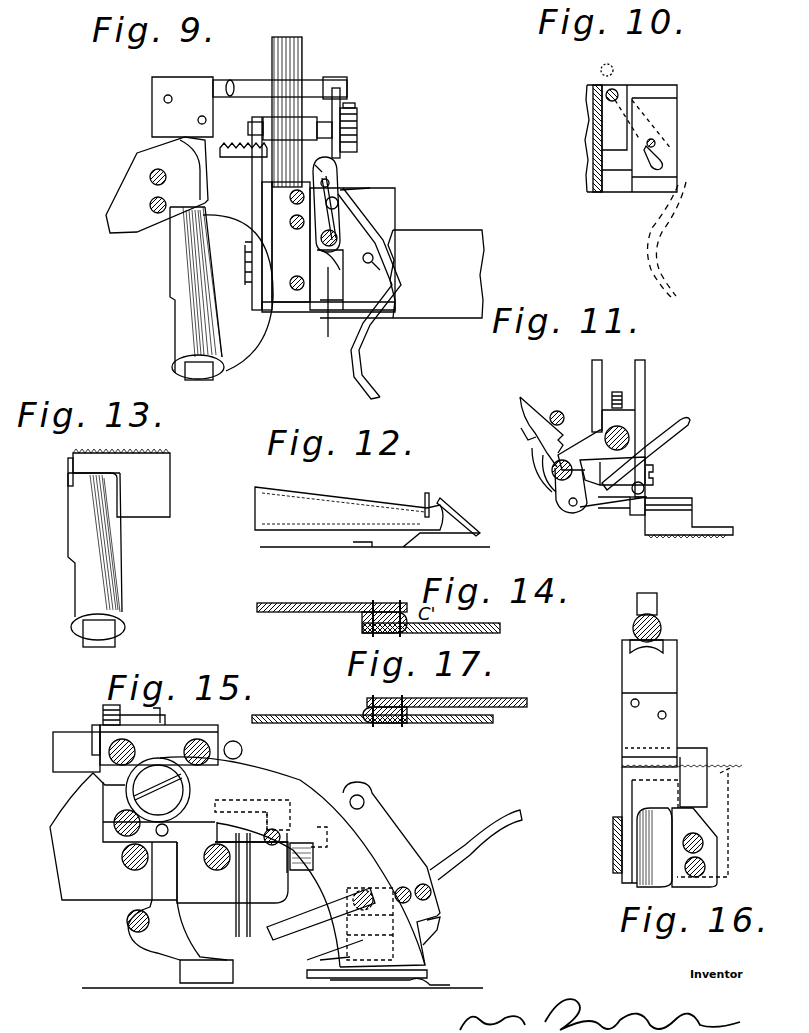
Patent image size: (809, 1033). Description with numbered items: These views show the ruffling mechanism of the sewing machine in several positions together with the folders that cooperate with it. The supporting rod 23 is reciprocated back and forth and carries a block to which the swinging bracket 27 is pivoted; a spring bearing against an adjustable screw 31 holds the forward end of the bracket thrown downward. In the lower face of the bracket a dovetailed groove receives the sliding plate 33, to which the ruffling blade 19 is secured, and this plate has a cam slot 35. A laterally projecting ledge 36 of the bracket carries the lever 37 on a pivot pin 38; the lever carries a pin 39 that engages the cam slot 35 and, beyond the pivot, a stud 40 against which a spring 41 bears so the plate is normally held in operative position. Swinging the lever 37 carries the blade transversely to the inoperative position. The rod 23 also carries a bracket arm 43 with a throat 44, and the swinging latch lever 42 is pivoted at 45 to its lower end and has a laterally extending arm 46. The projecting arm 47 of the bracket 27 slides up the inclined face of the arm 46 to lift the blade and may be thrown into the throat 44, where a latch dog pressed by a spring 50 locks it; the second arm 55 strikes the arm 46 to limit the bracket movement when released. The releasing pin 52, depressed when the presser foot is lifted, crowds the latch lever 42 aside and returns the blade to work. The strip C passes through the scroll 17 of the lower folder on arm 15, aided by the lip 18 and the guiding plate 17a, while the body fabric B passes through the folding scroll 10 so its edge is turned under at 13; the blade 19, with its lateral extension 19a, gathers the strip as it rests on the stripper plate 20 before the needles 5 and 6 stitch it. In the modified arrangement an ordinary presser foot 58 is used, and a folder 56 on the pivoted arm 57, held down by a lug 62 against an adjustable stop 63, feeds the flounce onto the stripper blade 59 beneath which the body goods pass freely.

In FIG. 15, the needle 5 is at (233, 910).
In FIG. 15, the needle 6 is at (257, 927).
In FIG. 9, the folding scroll 10 is at (160, 160).
In FIG. 14, the turned edge of body fabric 13 is at (362, 620).
In FIG. 9, the arm 15 is at (470, 290).
In FIG. 9, the scroll of folder 17 is at (180, 328).
In FIG. 13, the scroll of folder 17 is at (105, 593).
In FIG. 12, the scroll of folder 17 is at (320, 492).
In FIG. 13, the guiding plate 17a is at (68, 477).
In FIG. 12, the guiding plate 17a is at (428, 490).
In FIG. 13, the downwardly projecting lip 18 is at (83, 650).
In FIG. 11, the ruffling blade 19 is at (690, 530).
In FIG. 13, the ruffling blade 19 is at (178, 490).
In FIG. 12, the ruffling blade 19 is at (460, 515).
In FIG. 15, the ruffling blade 19 is at (320, 978).
In FIG. 16, the ruffling blade 19 is at (740, 762).
In FIG. 13, the lateral extension of ruffler blade 19a is at (93, 460).
In FIG. 12, the spring-supporting plate or stripper 20 is at (460, 535).
In FIG. 9, the supporting rod 23 is at (302, 62).
In FIG. 11, the supporting rod 23 is at (628, 435).
In FIG. 15, the supporting rod 23 is at (302, 873).
In FIG. 10, the swinging bracket 27 is at (593, 144).
In FIG. 11, the swinging bracket 27 is at (645, 365).
In FIG. 15, the swinging bracket 27 is at (390, 833).
In FIG. 11, the adjustable screw 31 is at (617, 390).
In FIG. 9, the sliding plate 33 is at (380, 215).
In FIG. 10, the sliding plate 33 is at (670, 90).
In FIG. 9, the cam slot 35 is at (384, 268).
In FIG. 10, the cam slot 35 is at (665, 158).
In FIG. 9, the laterally projecting ledge 36 is at (324, 315).
In FIG. 10, the laterally projecting ledge 36 is at (620, 118).
In FIG. 9, the lever 37 is at (372, 344).
In FIG. 10, the lever 37 is at (665, 232).
In FIG. 11, the lever 37 is at (680, 430).
In FIG. 15, the lever 37 is at (478, 823).
In FIG. 9, the pivot pin 38 is at (335, 202).
In FIG. 10, the pivot pin 38 is at (614, 90).
In FIG. 9, the pin 39 is at (372, 255).
In FIG. 10, the pin 39 is at (655, 140).
In FIG. 9, the stud 40 is at (337, 182).
In FIG. 9, the spring 41 is at (345, 215).
In FIG. 11, the swinging latch lever 42 is at (530, 400).
In FIG. 11, the bracket arm 43 is at (620, 420).
In FIG. 11, the throat 44 is at (640, 462).
In FIG. 9, the pivot 45 is at (290, 128).
In FIG. 11, the laterally extending arm 46 is at (605, 510).
In FIG. 11, the projecting arm 47 is at (644, 488).
In FIG. 11, the spring 50 is at (535, 455).
In FIG. 9, the releasing pin 52 is at (346, 100).
In FIG. 11, the releasing pin 52 is at (560, 410).
In FIG. 9, the second arm 55 is at (250, 165).
In FIG. 11, the second arm 55 is at (654, 475).
In FIG. 15, the second arm 55 is at (321, 924).
In FIG. 15, the folder 56 is at (440, 937).
In FIG. 16, the folder 56 is at (640, 887).
In FIG. 15, the arm 57 is at (260, 783).
In FIG. 15, the presser foot 58 is at (197, 983).
In FIG. 16, the presser foot 58 is at (668, 702).
In FIG. 15, the stripper blade 59 is at (350, 983).
In FIG. 15, the lug 62 is at (112, 772).
In FIG. 15, the adjustable stop 63 is at (95, 755).
In FIG. 14, the body fabric B is at (275, 615).
In FIG. 14, the strip C is at (440, 637).